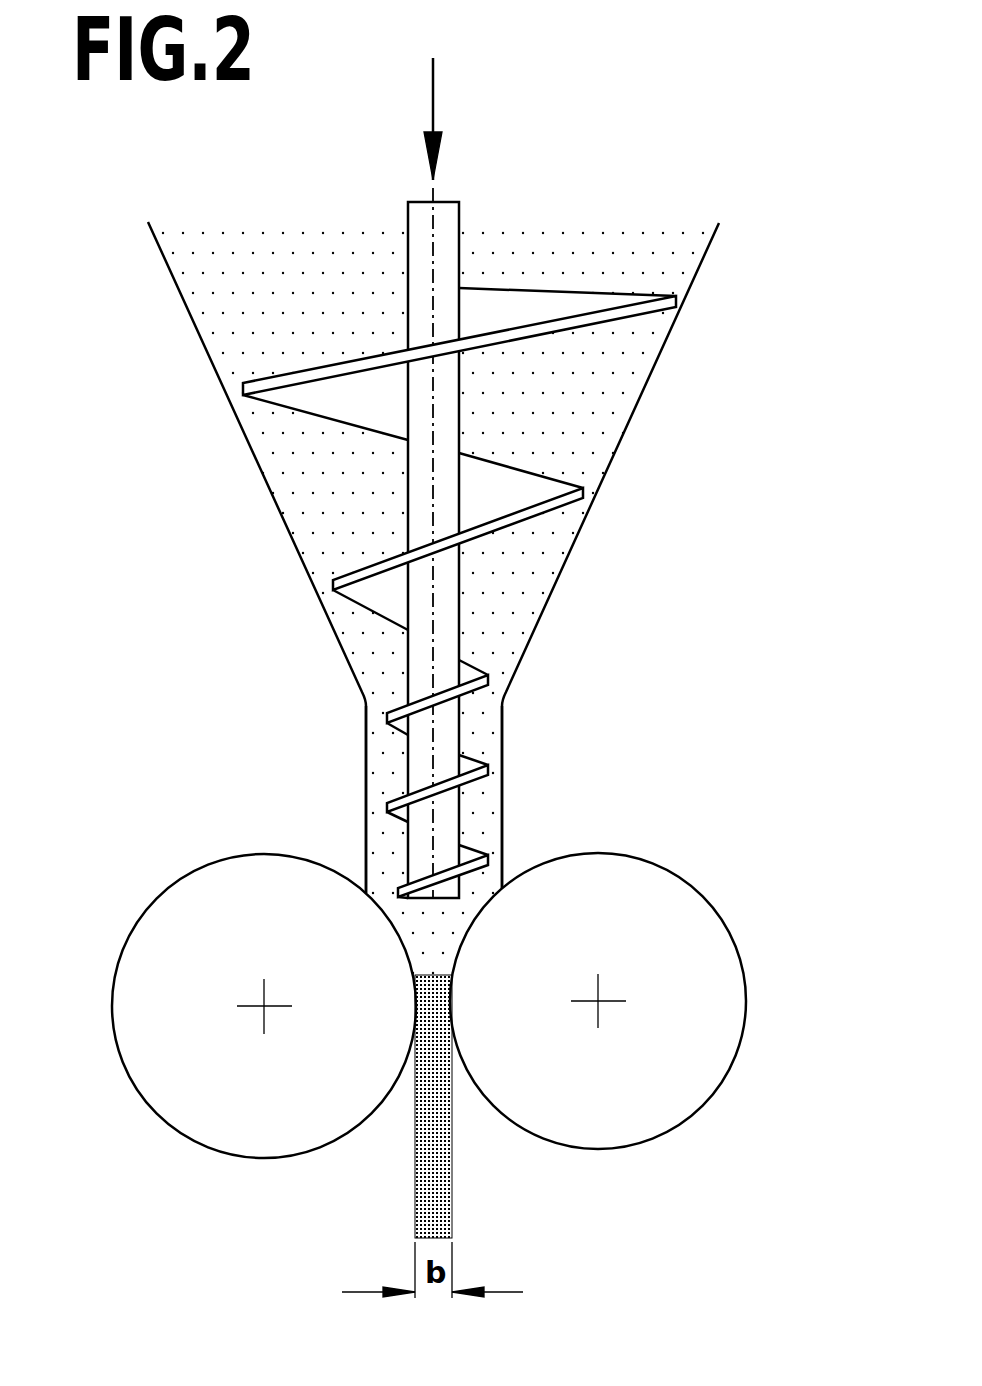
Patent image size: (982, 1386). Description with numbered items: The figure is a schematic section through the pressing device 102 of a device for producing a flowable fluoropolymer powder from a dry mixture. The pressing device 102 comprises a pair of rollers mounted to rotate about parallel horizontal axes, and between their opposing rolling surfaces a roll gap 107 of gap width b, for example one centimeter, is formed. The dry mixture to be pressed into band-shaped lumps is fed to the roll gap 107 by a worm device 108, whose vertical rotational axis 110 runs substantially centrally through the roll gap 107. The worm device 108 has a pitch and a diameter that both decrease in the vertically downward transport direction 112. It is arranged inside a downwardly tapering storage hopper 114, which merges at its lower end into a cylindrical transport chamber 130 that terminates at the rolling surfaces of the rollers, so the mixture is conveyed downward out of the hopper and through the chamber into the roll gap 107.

The pressing device 102 is at (453, 1015).
The roll gap 107 is at (394, 1122).
The worm device 108 is at (459, 530).
The rotational axis 110 is at (433, 222).
The transport direction 112 is at (434, 84).
The storage hopper 114 is at (655, 363).
The transport chamber 130 is at (502, 772).